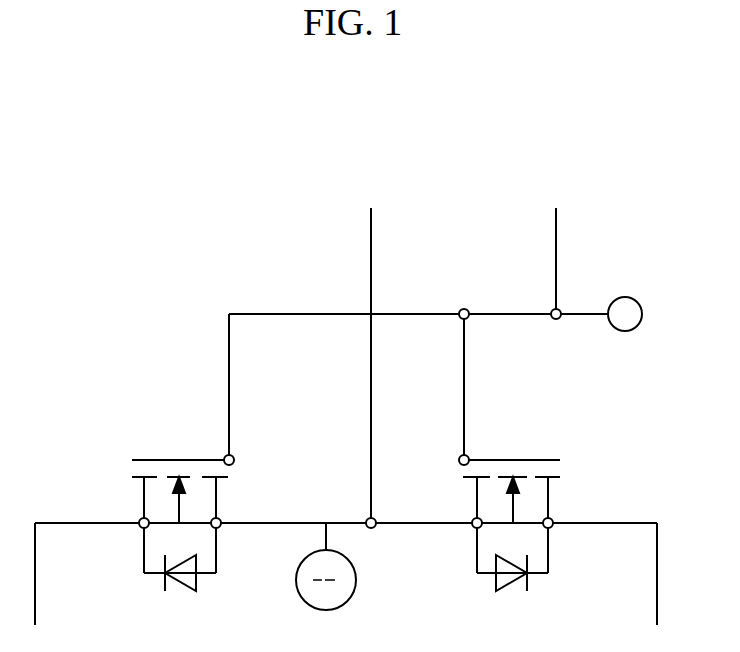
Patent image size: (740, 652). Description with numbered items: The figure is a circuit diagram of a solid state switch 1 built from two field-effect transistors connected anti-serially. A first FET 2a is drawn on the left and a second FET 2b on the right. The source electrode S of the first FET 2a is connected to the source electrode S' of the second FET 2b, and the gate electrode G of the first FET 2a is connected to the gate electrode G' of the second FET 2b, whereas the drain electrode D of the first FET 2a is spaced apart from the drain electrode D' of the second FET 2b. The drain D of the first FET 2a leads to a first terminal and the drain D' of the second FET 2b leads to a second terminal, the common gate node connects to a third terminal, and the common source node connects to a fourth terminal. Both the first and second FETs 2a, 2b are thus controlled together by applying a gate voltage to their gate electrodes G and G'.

The solid state switch 1 is at (175, 229).
The first FET 2a is at (179, 459).
The second FET 2b is at (511, 459).